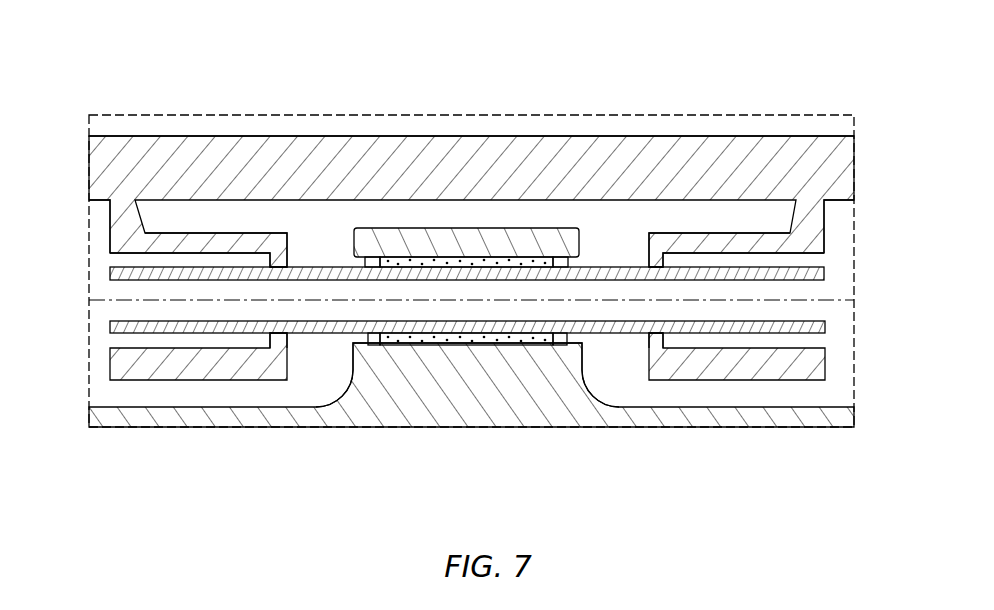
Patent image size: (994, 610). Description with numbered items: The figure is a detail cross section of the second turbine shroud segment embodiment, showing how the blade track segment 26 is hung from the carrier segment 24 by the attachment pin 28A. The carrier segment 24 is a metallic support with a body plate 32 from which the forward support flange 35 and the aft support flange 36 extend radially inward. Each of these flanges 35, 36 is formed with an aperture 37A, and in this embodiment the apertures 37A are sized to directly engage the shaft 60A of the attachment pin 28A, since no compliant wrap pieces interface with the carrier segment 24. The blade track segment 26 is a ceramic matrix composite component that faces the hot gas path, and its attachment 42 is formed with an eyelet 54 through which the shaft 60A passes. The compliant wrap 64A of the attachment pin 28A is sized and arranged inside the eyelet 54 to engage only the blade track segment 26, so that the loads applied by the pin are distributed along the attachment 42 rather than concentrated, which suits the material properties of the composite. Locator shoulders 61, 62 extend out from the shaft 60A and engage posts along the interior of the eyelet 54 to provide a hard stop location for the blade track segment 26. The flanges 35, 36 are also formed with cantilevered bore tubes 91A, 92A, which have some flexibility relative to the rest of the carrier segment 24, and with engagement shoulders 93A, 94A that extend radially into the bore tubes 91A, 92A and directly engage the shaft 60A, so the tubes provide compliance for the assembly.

The carrier segment 24 is at (745, 118).
The body plate 32 is at (612, 118).
The forward support flange 35 is at (100, 232).
The aft support flange 36 is at (840, 231).
The apertures 37A is at (268, 270).
The shaft 60A is at (474, 300).
The attachment pin 28A is at (845, 328).
The locator shoulder 61 is at (375, 246).
The locator shoulder 62 is at (556, 246).
The eyelet 54 is at (450, 260).
The attachment 42 is at (470, 205).
The cantilevered bore tube 91A is at (212, 392).
The cantilevered bore tube 92A is at (765, 395).
The engagement shoulder 93A is at (306, 345).
The engagement shoulder 94A is at (625, 345).
The blade track segment 26 is at (724, 437).
The compliant wrap 64A is at (456, 368).